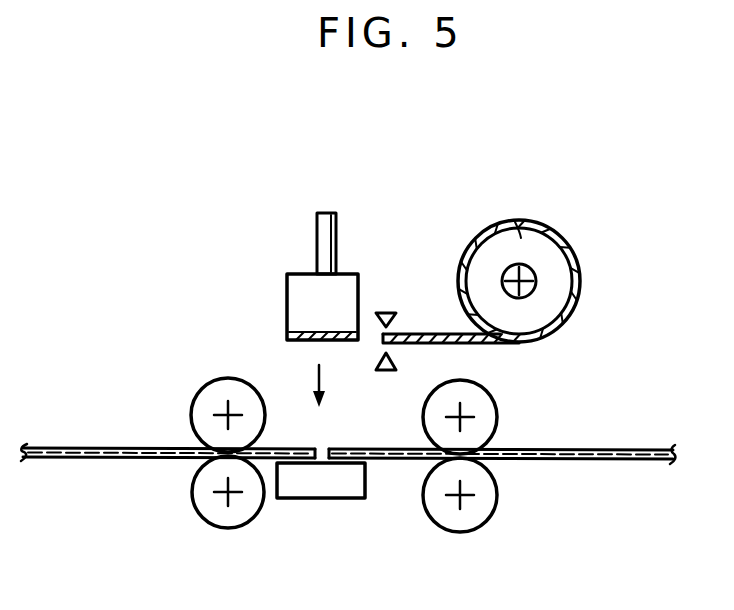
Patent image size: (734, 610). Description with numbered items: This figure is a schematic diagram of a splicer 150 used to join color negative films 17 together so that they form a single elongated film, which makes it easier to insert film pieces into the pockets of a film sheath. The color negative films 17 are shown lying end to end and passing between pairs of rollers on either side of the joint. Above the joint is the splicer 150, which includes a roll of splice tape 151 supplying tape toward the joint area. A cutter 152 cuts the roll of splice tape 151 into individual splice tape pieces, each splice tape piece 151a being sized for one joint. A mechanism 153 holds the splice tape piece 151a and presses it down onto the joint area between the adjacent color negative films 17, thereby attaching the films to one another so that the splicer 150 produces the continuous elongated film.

The splicer 150 is at (408, 193).
The roll of splice tape 151 is at (533, 318).
The splice tape piece 151a is at (296, 340).
The cutter 152 is at (386, 311).
The mechanism 153 is at (319, 232).
The color negative film 17 is at (115, 458).